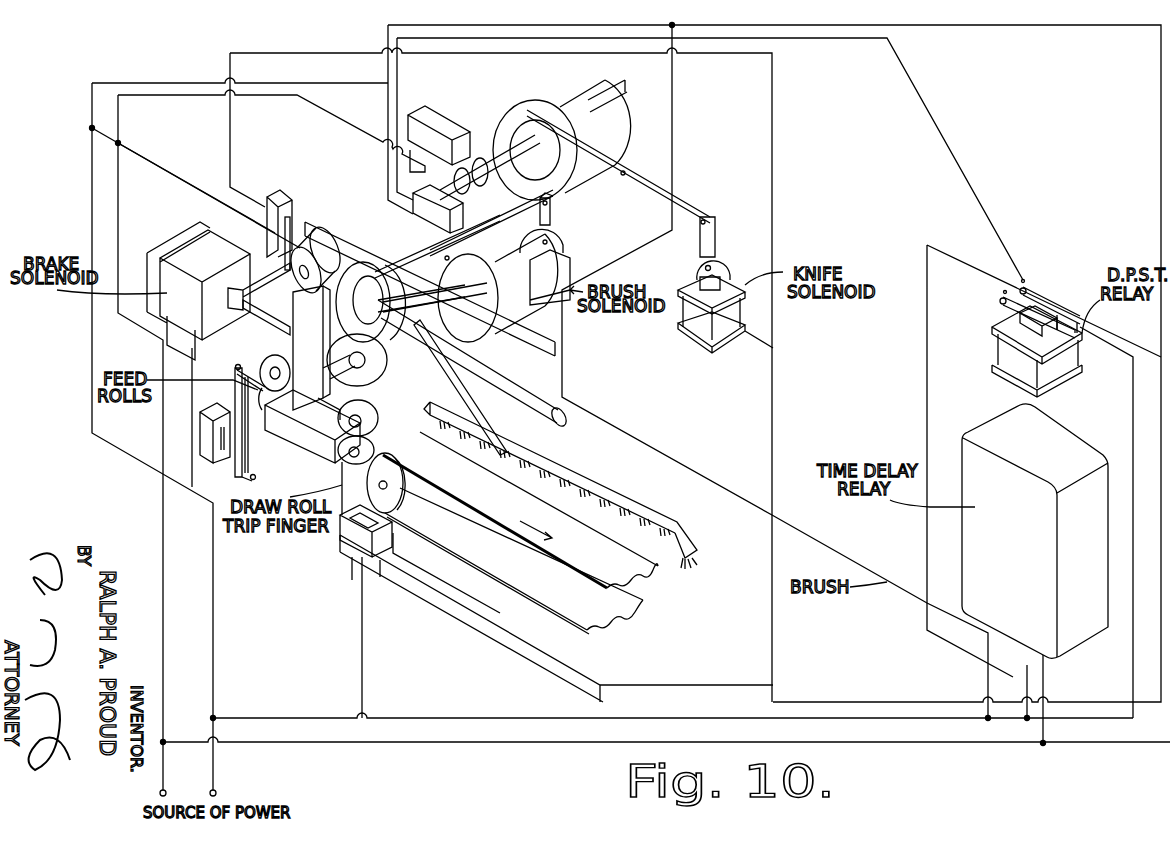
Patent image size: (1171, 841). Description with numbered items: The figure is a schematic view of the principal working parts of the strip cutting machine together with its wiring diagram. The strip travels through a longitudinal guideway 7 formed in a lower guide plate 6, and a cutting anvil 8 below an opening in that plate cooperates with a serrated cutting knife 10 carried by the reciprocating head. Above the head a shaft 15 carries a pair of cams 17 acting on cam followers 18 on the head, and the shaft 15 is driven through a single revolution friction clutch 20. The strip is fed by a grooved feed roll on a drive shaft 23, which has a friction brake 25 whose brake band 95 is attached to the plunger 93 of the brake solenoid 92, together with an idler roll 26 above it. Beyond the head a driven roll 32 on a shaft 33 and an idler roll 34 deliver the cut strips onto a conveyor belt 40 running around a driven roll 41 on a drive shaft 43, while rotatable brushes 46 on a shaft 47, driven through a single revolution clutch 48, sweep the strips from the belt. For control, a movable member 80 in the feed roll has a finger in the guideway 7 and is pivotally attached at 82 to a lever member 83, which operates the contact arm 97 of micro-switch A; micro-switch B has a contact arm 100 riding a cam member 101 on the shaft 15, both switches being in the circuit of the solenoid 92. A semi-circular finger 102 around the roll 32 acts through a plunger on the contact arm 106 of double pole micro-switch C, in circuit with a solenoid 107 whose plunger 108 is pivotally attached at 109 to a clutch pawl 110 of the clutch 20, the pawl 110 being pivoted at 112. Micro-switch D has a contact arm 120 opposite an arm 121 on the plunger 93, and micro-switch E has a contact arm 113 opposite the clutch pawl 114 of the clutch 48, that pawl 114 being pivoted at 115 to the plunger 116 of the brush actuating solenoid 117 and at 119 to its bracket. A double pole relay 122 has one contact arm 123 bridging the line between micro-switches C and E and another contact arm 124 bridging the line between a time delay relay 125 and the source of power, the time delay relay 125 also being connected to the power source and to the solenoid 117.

The lower guide plate 6 is at (320, 455).
The guideway 7 is at (300, 443).
The cutting anvil 8 is at (258, 472).
The cutting knife 10 is at (297, 345).
The shaft 15 is at (373, 232).
The cams 17 is at (330, 245).
The cam followers 18 is at (368, 285).
The single revolution friction clutch 20 is at (585, 130).
The drive shaft 23 is at (455, 318).
The friction brake 25 is at (380, 360).
The idler roll 26 is at (262, 362).
The driven roll 32 is at (347, 470).
The shaft 33 is at (403, 400).
The idler roll 34 is at (372, 408).
The conveyor belt 40 is at (555, 575).
The driven roll 41 is at (397, 517).
The drive shaft 43 is at (387, 483).
The rotatable brushes 46 is at (622, 500).
The rotatable shaft 47 is at (515, 390).
The single revolution clutch 48 is at (385, 268).
The movable member 80 is at (235, 366).
The pivot 82 is at (245, 392).
The lever member 83 is at (250, 428).
The solenoid 92 is at (183, 253).
The plunger 93 is at (266, 318).
The brake band 95 is at (326, 330).
The contact arm 97 is at (200, 468).
The contact arm 100 is at (462, 168).
The cam member 101 is at (485, 165).
The movable finger 102 is at (345, 528).
The contact arm 106 is at (350, 552).
The solenoid 107 is at (698, 330).
The plunger 108 is at (698, 285).
The pivot 109 is at (715, 215).
The clutch pawl 110 is at (695, 208).
The pivot 112 is at (624, 172).
The contact arm 113 is at (470, 235).
The clutch pawl 114 is at (462, 255).
The pivot 115 is at (552, 200).
The plunger 116 is at (555, 245).
The solenoid 117 is at (566, 262).
The pivot 119 is at (425, 280).
The contact arm 120 is at (289, 240).
The outwardly extending arm 121 is at (267, 253).
The double pole relay 122 is at (1010, 375).
The contact arm 123 is at (1038, 298).
The contact arm 124 is at (1000, 303).
The time delay relay 125 is at (1018, 541).
The micro-switch A is at (200, 437).
The micro-switch B is at (435, 122).
The double pole micro-switch C is at (372, 545).
The micro-switch D is at (280, 195).
The micro-switch E is at (425, 195).